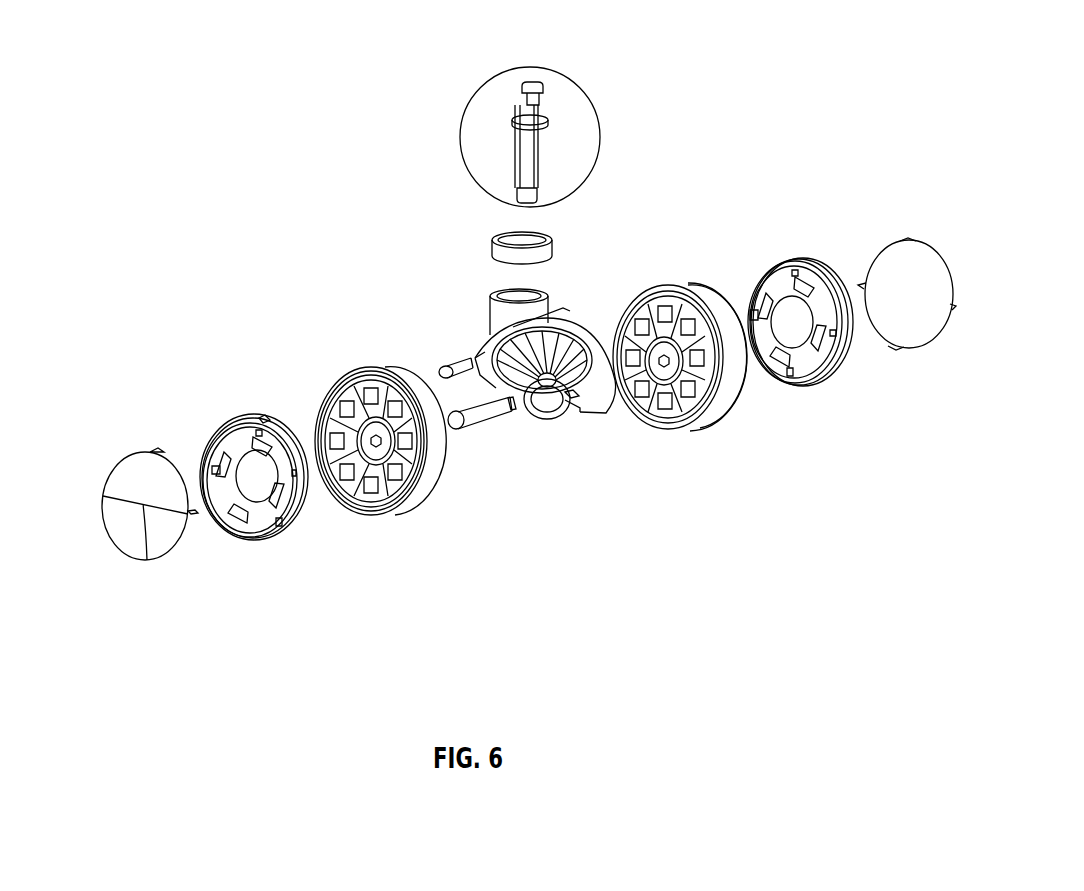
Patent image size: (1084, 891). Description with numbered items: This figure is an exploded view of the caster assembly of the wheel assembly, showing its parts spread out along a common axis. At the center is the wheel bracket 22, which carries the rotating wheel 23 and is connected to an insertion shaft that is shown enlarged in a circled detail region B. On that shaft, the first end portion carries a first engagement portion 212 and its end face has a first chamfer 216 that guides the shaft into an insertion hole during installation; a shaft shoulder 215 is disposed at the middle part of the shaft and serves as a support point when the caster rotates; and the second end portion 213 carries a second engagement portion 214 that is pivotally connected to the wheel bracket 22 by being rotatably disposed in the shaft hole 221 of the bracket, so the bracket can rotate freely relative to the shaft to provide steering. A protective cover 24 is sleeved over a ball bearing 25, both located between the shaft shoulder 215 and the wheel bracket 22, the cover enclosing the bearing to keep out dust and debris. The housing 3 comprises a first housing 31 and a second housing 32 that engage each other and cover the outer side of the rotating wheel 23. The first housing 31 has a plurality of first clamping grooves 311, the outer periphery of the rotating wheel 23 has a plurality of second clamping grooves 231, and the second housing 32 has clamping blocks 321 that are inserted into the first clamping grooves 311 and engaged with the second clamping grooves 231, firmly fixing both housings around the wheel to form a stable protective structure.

The housing 3 is at (60, 673).
The first housing 31 is at (263, 540).
The first clamping grooves 311 is at (263, 420).
The second housing 32 is at (147, 560).
The clamping blocks 321 is at (158, 455).
The rotating wheel 23 is at (395, 372).
The second clamping grooves 231 is at (373, 513).
The ball bearing 25 is at (456, 366).
The wheel bracket 22 is at (572, 400).
The shaft hole 221 is at (505, 292).
The protective cover 24 is at (545, 240).
The detail region B is at (592, 183).
The first engagement portion 212 is at (541, 100).
The second end portion 213 is at (518, 193).
The second engagement portion 214 is at (548, 192).
The shaft shoulder 215 is at (514, 117).
The first chamfer 216 is at (532, 84).